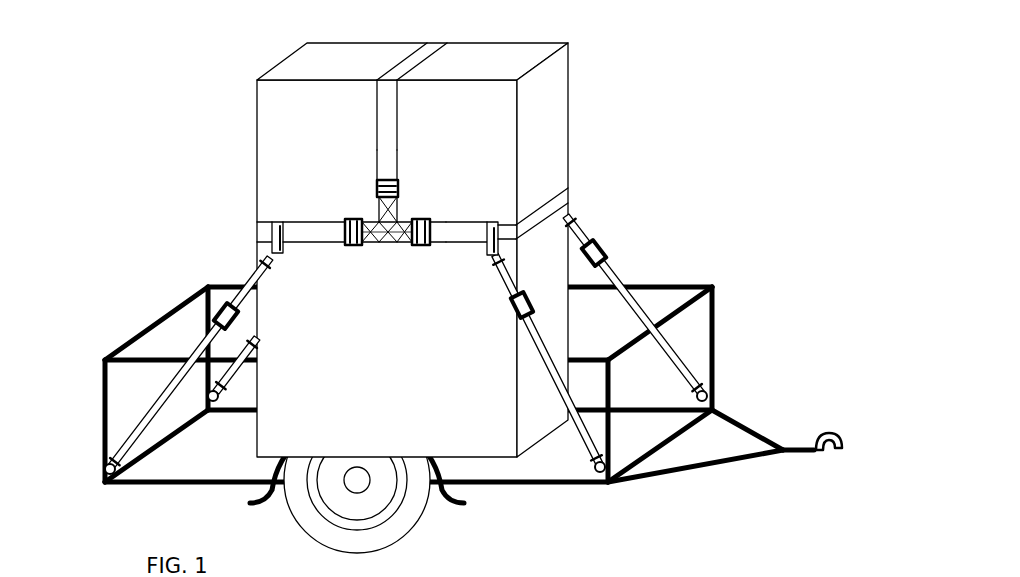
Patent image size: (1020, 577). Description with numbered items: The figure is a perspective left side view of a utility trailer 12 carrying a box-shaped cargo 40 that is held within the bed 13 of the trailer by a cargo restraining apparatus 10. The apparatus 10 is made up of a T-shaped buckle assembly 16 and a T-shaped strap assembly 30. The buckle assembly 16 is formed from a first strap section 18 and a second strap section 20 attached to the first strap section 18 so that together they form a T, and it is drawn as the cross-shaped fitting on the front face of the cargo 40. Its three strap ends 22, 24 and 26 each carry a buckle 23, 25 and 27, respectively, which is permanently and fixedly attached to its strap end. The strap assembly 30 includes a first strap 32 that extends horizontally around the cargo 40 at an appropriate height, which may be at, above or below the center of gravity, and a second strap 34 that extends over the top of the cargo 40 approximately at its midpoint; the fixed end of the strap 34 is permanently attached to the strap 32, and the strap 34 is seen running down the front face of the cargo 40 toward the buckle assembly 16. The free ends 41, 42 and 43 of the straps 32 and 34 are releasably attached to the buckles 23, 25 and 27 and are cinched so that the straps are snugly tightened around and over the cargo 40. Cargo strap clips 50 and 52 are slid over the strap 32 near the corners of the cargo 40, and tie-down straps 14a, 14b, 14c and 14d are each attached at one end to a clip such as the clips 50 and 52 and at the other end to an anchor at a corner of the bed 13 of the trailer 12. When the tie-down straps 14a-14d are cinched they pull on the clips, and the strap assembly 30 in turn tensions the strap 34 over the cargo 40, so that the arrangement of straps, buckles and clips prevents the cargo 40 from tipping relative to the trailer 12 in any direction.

The cargo restraining apparatus 10 is at (417, 188).
The utility trailer 12 is at (681, 287).
The bed 13 is at (507, 465).
The tie down strap 14a is at (610, 266).
The tie down strap 14b is at (577, 427).
The tie down strap 14c is at (145, 414).
The tie down strap 14d is at (240, 378).
The T-shaped buckle assembly 16 is at (386, 245).
The first strap section 18 is at (372, 245).
The second strap section 20 is at (377, 215).
The strap end 22 is at (342, 238).
The buckle 23 is at (346, 228).
The strap end 24 is at (415, 246).
The buckle 25 is at (431, 229).
The strap end 26 is at (396, 184).
The buckle 27 is at (378, 186).
The T-shaped strap assembly 30 is at (562, 200).
The first strap 32 is at (263, 233).
The second strap 34 is at (413, 60).
The cargo 40 is at (503, 51).
The free end 41 is at (315, 232).
The free end 42 is at (445, 245).
The free end 43 is at (384, 165).
The cargo strap clip 50 is at (494, 233).
The cargo strap clip 52 is at (277, 244).